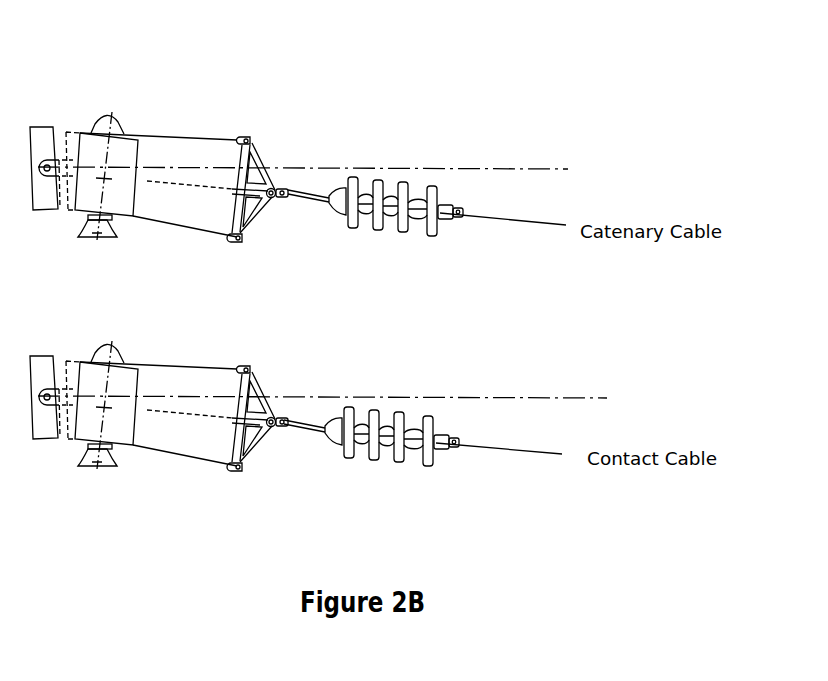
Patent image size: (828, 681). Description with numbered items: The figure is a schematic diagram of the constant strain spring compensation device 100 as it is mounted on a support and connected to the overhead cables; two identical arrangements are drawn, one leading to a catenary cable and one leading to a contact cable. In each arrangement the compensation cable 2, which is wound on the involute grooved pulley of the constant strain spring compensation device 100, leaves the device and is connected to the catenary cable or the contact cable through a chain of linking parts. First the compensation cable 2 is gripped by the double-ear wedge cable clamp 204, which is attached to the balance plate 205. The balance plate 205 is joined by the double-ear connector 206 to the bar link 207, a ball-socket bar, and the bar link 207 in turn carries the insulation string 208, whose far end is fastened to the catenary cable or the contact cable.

The constant strain spring compensation device 100 is at (299, 125).
The compensation cable 2 is at (192, 115).
The double-ear wedge cable clamp 204 is at (250, 139).
The balance plate 205 is at (268, 164).
The double-ear connector 206 is at (283, 190).
The bar link 207 is at (323, 196).
The insulation string 208 is at (410, 191).